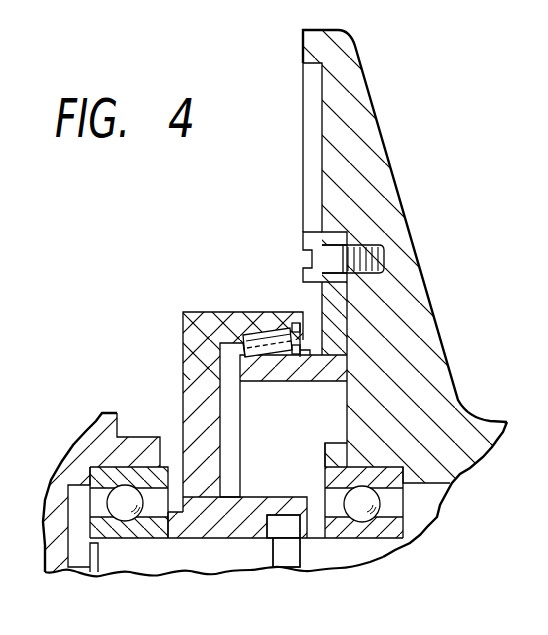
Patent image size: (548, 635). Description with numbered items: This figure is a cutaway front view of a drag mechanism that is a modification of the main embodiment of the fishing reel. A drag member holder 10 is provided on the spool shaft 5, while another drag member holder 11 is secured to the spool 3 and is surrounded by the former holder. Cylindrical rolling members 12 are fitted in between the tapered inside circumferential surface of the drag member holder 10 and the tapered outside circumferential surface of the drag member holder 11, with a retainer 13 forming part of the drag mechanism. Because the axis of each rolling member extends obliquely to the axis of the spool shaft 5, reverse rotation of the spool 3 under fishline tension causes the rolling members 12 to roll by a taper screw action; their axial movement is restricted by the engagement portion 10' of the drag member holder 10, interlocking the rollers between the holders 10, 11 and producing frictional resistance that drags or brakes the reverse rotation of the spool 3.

The spool 3 is at (365, 127).
The spool shaft 5 is at (187, 560).
The drag member holder 10 is at (267, 292).
The engagement portion 10' is at (207, 291).
The drag member holder 11 is at (238, 373).
The cylindrical rolling members 12 is at (267, 340).
The retainer 13 is at (183, 312).